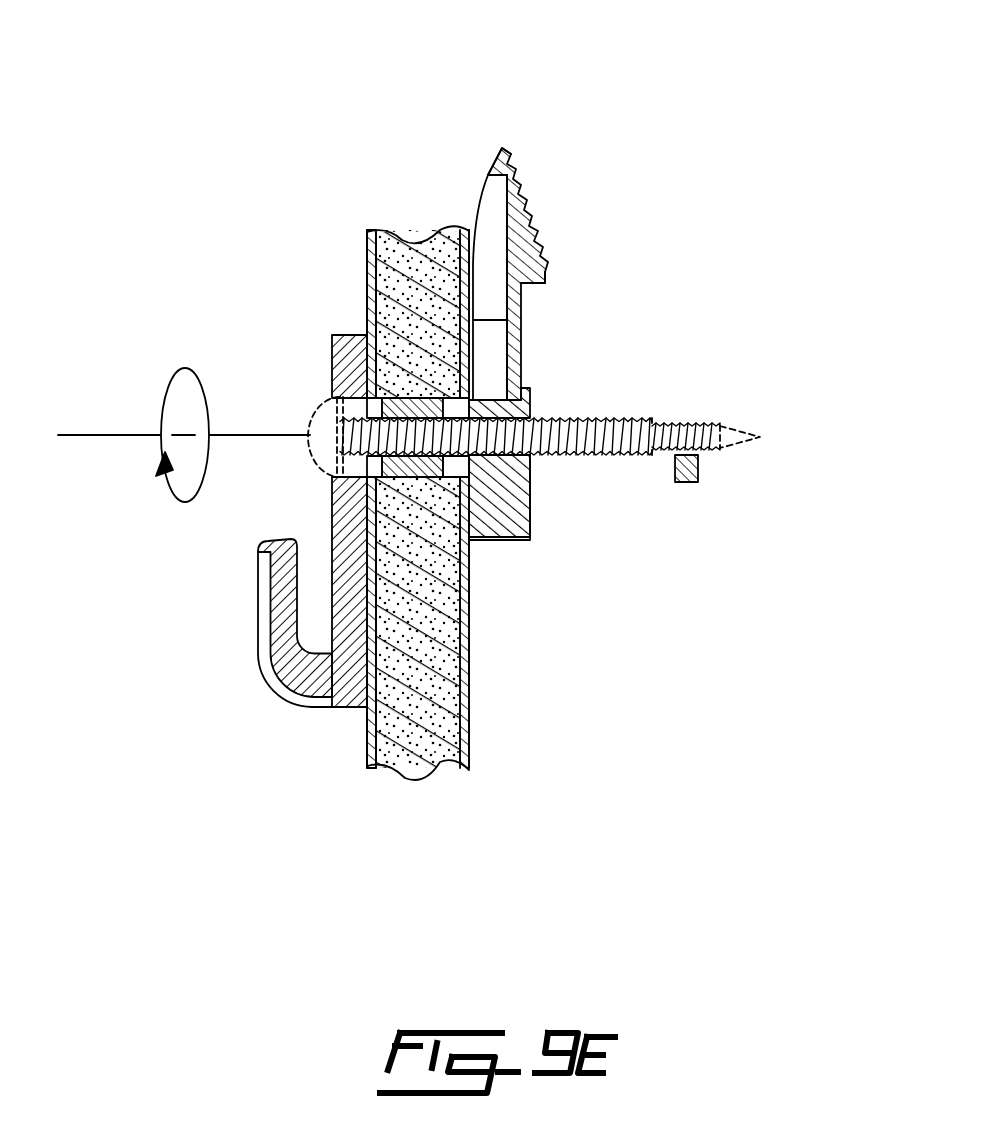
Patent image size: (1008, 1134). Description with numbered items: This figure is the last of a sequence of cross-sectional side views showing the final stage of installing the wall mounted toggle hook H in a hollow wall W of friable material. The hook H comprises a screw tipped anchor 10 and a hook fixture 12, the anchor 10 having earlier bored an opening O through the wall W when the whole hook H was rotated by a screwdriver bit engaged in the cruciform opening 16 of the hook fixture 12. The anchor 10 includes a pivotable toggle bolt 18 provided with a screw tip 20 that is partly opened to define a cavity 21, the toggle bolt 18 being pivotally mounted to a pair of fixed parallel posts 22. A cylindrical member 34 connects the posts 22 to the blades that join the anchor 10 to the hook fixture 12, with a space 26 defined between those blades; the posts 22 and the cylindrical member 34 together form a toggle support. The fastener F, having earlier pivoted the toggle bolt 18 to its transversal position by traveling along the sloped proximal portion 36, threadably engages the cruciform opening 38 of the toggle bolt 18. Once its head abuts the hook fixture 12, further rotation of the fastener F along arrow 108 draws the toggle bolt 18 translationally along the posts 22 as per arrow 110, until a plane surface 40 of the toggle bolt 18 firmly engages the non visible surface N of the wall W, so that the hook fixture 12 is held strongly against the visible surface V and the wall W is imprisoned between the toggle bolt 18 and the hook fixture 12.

The screw tipped anchor 10 is at (555, 288).
The hook fixture 12 is at (282, 690).
The cruciform opening 16 is at (334, 381).
The toggle bolt 18 is at (527, 382).
The screw tip 20 is at (532, 215).
The cavity 21 is at (492, 193).
The fixed parallel posts 22 is at (680, 483).
The space 26 is at (337, 480).
The cylindrical member 34 is at (332, 497).
The sloped proximal portion 36 is at (478, 478).
The cruciform opening 38 is at (530, 462).
The plane surface 40 is at (443, 230).
The arrow 108 is at (184, 368).
The arrow 110 is at (630, 306).
The toggle hook H is at (570, 222).
The fastener F is at (742, 431).
The opening O is at (457, 467).
The visible surface V is at (367, 738).
The non visible surface N is at (470, 695).
The wall W is at (430, 770).